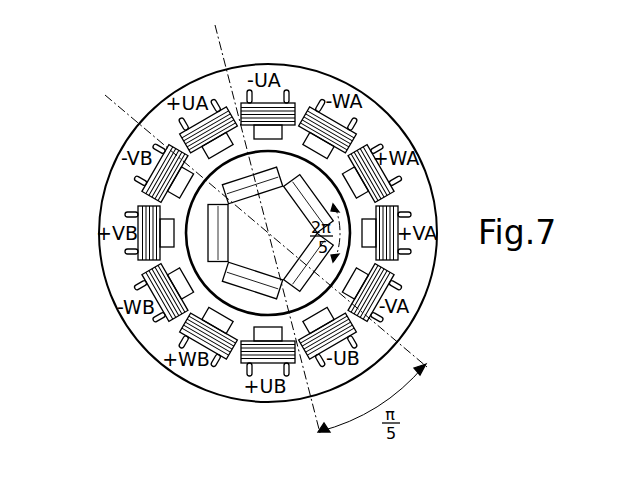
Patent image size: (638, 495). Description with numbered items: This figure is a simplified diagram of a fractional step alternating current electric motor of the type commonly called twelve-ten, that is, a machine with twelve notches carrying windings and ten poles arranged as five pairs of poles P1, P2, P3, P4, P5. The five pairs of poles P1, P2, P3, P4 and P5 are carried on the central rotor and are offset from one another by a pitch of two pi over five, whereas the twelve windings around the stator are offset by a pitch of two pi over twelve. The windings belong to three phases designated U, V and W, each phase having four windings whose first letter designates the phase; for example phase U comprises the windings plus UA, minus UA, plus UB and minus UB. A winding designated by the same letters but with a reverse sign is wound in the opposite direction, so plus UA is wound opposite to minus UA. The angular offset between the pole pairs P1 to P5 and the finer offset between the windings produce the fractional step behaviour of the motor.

The pair of poles P1 is at (263, 172).
The pair of poles P2 is at (205, 222).
The pair of poles P3 is at (237, 268).
The pair of poles P4 is at (332, 186).
The pair of poles P5 is at (322, 273).